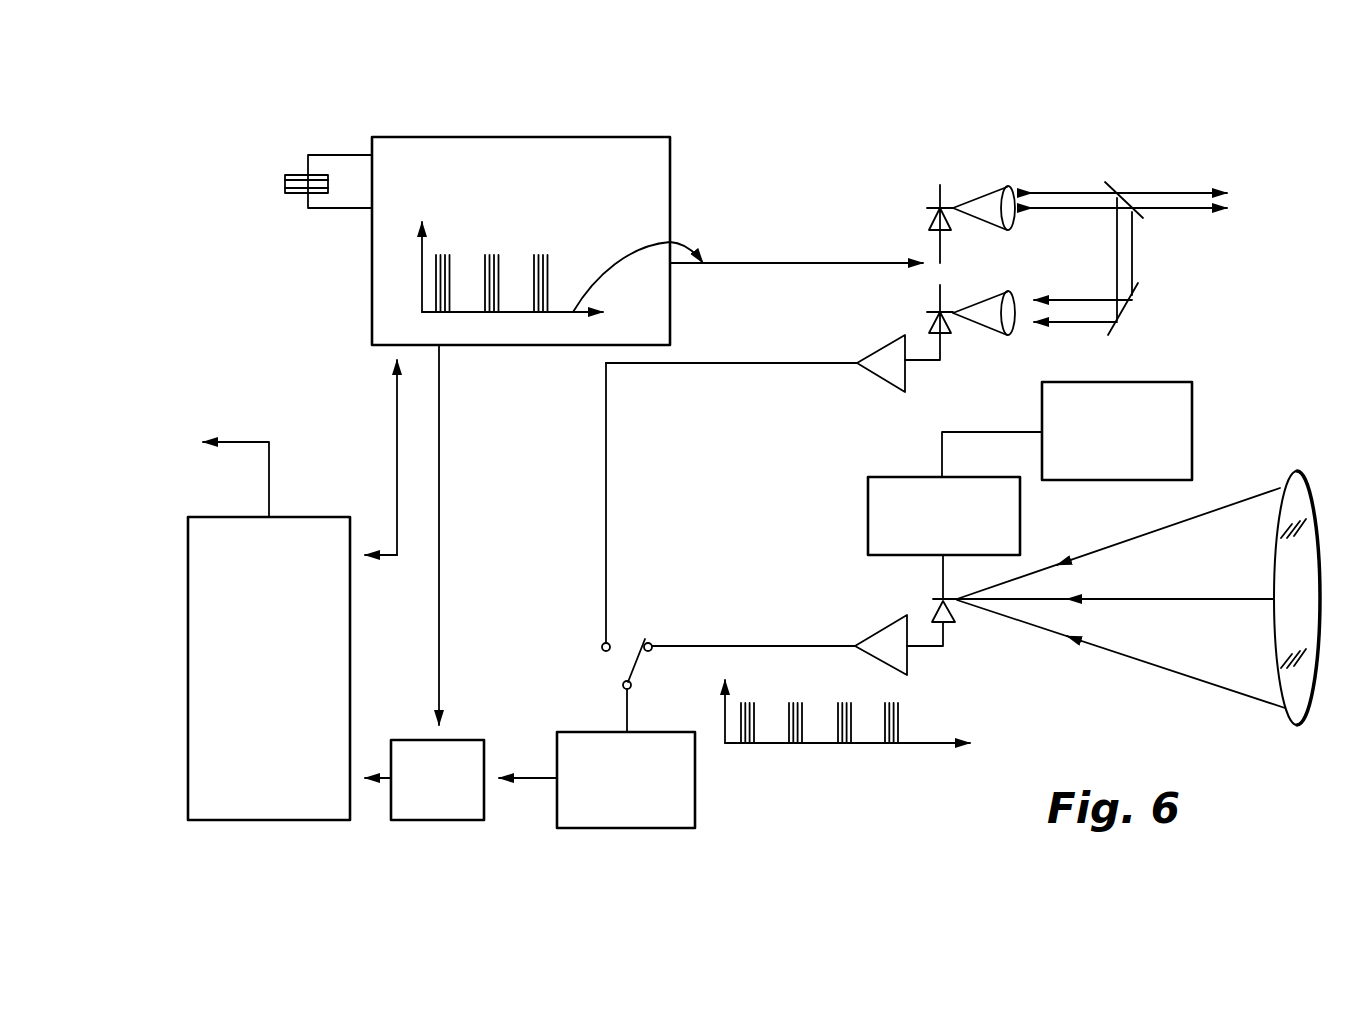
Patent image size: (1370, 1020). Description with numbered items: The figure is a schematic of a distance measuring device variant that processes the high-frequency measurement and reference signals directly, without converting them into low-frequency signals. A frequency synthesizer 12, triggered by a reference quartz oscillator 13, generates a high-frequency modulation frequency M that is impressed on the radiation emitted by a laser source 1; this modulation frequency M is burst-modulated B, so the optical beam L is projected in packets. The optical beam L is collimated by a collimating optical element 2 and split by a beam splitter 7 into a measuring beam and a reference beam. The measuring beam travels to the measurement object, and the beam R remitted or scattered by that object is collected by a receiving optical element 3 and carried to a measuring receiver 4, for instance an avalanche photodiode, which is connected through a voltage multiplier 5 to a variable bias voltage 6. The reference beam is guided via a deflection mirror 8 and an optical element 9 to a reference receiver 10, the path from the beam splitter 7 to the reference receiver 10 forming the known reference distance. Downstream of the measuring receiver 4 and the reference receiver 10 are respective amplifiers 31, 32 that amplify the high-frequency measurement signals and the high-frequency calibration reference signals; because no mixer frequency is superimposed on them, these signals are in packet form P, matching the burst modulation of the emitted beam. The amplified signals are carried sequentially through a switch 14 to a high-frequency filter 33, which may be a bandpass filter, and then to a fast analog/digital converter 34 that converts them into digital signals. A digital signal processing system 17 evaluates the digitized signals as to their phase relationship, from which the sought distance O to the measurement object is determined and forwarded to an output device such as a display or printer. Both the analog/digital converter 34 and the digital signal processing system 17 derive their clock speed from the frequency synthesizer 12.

The laser source 1 is at (942, 215).
The collimating optical element 2 is at (1010, 184).
The receiving optical element 3 is at (1302, 480).
The measuring receiver 4 is at (950, 604).
The voltage multiplier 5 is at (1020, 515).
The variable bias voltage 6 is at (1192, 425).
The beam splitter 7 is at (1115, 181).
The deflection mirror 8 is at (1127, 310).
The optical element 9 is at (1010, 337).
The reference receiver 10 is at (942, 320).
The frequency synthesizer 12 is at (521, 209).
The reference quartz oscillator 13 is at (297, 173).
The switch 14 is at (628, 663).
The digital signal processing system 17 is at (262, 822).
The amplifier 31 is at (883, 630).
The amplifier 32 is at (878, 347).
The high-frequency filter 33 is at (621, 830).
The analog/digital converter 34 is at (437, 822).
The burst modulation B is at (542, 252).
The optical beam L is at (1175, 197).
The modulation frequency M is at (787, 262).
The distance O is at (273, 477).
The packet form P is at (897, 723).
The remitted beam R is at (1203, 660).